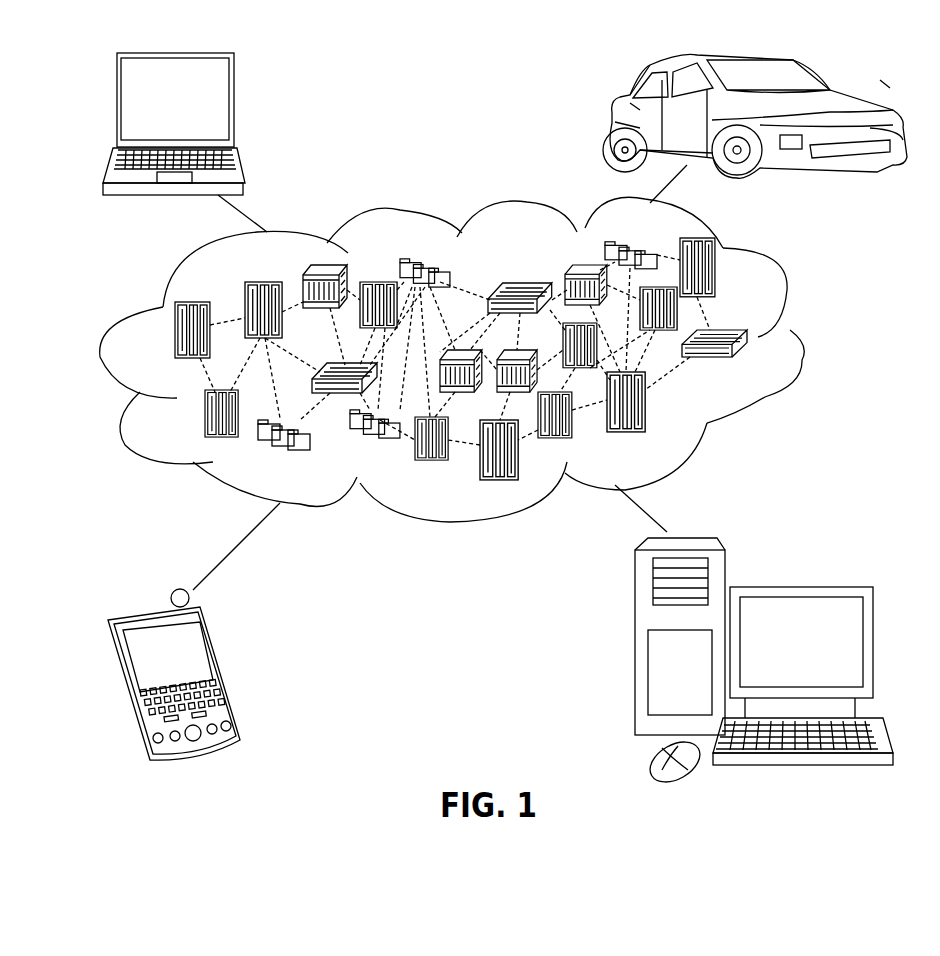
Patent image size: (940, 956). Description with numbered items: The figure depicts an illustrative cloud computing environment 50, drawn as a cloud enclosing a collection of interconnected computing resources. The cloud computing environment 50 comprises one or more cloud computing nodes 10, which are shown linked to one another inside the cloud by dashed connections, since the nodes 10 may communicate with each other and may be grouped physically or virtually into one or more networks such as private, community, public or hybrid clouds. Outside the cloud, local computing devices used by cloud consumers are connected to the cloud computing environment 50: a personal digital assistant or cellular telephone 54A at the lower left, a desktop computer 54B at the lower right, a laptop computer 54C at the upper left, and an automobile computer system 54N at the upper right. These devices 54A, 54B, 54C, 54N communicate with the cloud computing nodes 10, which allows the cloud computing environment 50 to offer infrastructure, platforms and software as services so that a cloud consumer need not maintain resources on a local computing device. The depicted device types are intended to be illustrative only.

The cloud computing node 10 is at (750, 365).
The cloud computing environment 50 is at (797, 336).
The personal digital assistant or cellular telephone 54A is at (227, 667).
The desktop computer 54B is at (800, 587).
The laptop computer 54C is at (235, 103).
The automobile computer system 54N is at (612, 112).